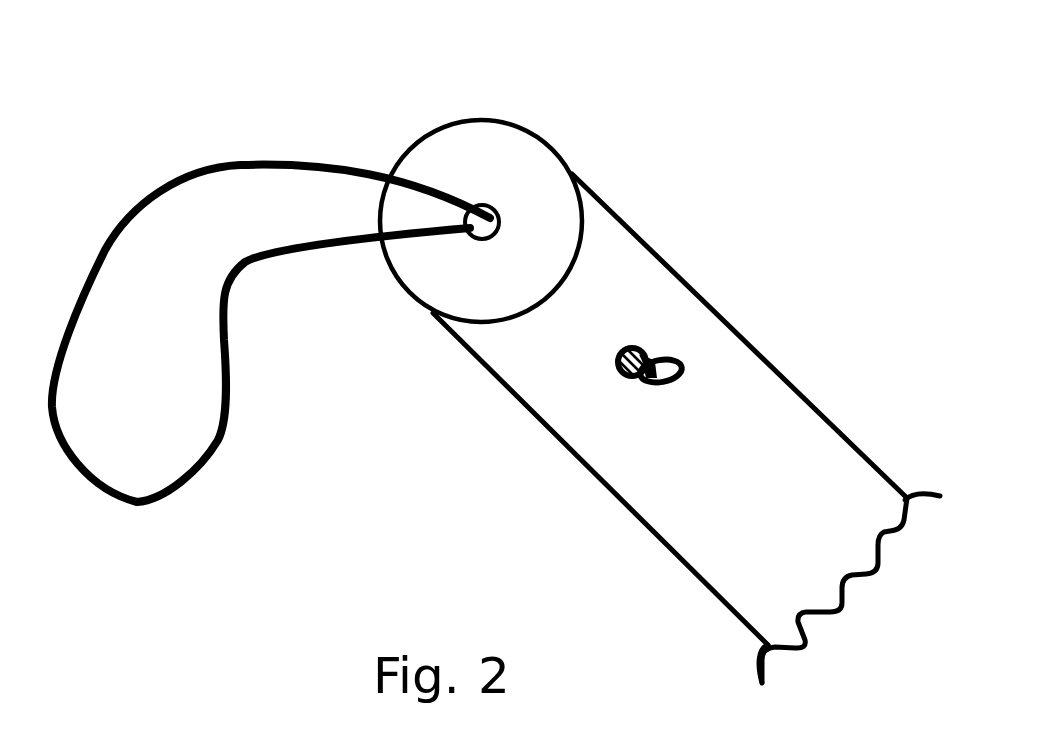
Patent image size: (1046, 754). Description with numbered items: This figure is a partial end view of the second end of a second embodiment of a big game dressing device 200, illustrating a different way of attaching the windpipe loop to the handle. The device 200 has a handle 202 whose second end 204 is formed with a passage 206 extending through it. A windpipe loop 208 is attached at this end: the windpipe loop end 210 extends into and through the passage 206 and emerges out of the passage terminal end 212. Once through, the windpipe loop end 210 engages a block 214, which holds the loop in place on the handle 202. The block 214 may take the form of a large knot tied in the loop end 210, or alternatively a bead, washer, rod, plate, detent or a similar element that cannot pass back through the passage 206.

The big game dressing device 200 is at (310, 535).
The handle 202 is at (807, 452).
The second end 204 is at (508, 155).
The passage 206 is at (486, 205).
The windpipe loop 208 is at (135, 203).
The windpipe loop end 210 is at (637, 383).
The passage terminal end 212 is at (650, 347).
The block 214 is at (695, 383).